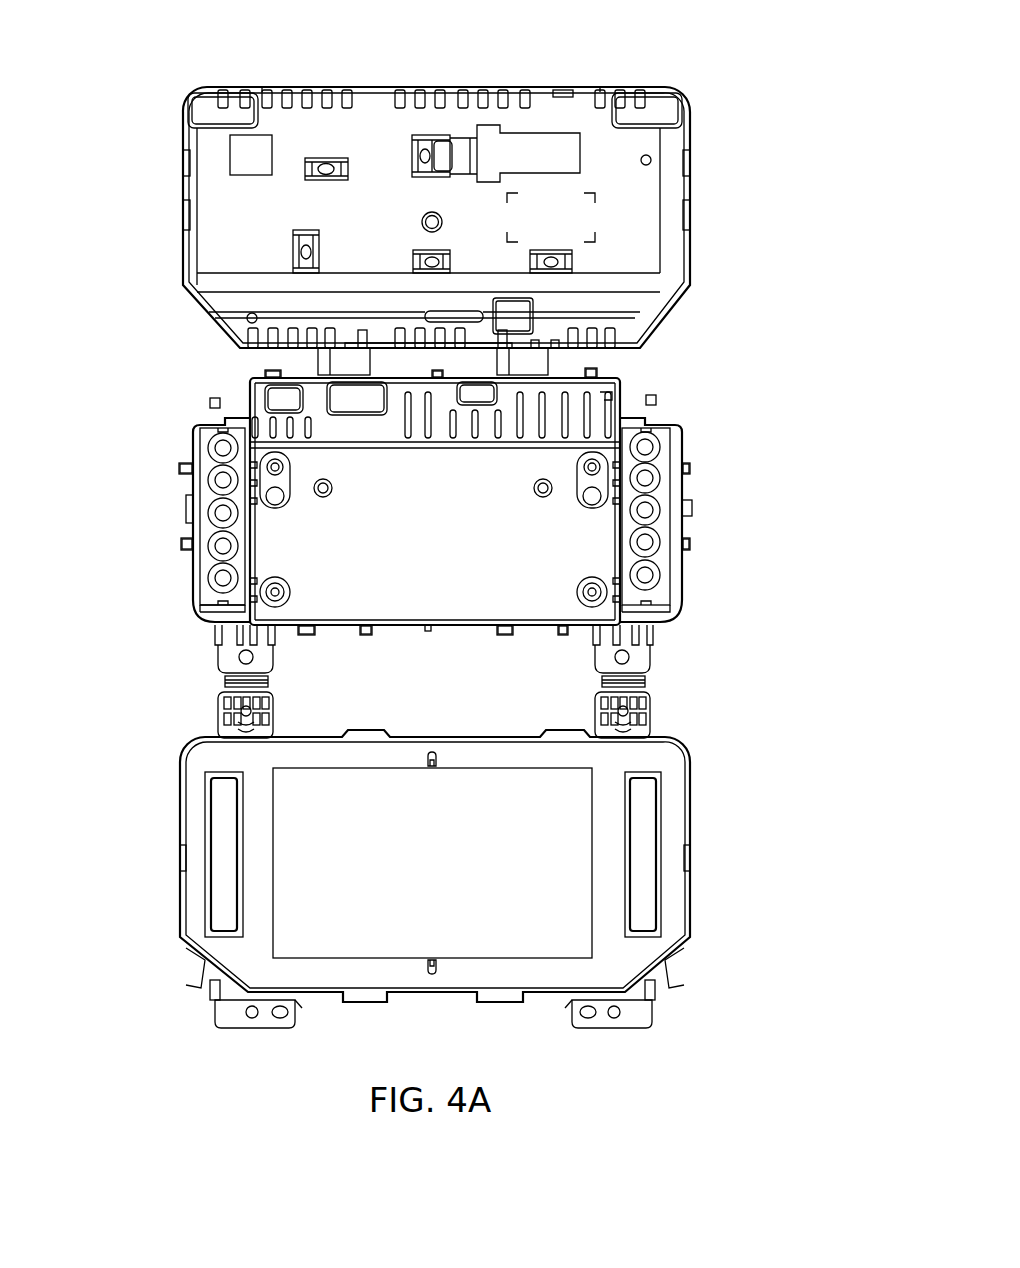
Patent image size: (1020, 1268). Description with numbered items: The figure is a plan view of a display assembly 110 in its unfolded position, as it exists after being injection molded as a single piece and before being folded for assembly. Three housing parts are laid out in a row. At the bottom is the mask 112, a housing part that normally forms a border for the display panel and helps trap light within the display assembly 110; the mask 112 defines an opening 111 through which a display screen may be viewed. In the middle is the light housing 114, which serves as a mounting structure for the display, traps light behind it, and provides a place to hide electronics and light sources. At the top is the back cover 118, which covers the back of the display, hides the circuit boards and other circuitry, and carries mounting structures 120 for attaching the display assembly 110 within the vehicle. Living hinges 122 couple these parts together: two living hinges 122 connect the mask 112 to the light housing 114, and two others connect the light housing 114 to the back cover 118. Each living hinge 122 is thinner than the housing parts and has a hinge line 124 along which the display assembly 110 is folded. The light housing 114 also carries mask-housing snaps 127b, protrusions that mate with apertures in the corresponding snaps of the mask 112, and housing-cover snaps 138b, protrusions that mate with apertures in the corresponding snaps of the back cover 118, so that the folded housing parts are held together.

The display assembly 110 is at (132, 364).
The opening 111 is at (430, 874).
The mask 112 is at (483, 879).
The light housing 114 is at (690, 535).
The back cover 118 is at (708, 190).
The mounting structures 120 is at (328, 158).
The living hinges 122 is at (308, 364).
The hinge line 124 is at (520, 358).
The mask-housing snaps 127b is at (266, 373).
The housing-cover snaps 138b is at (362, 348).